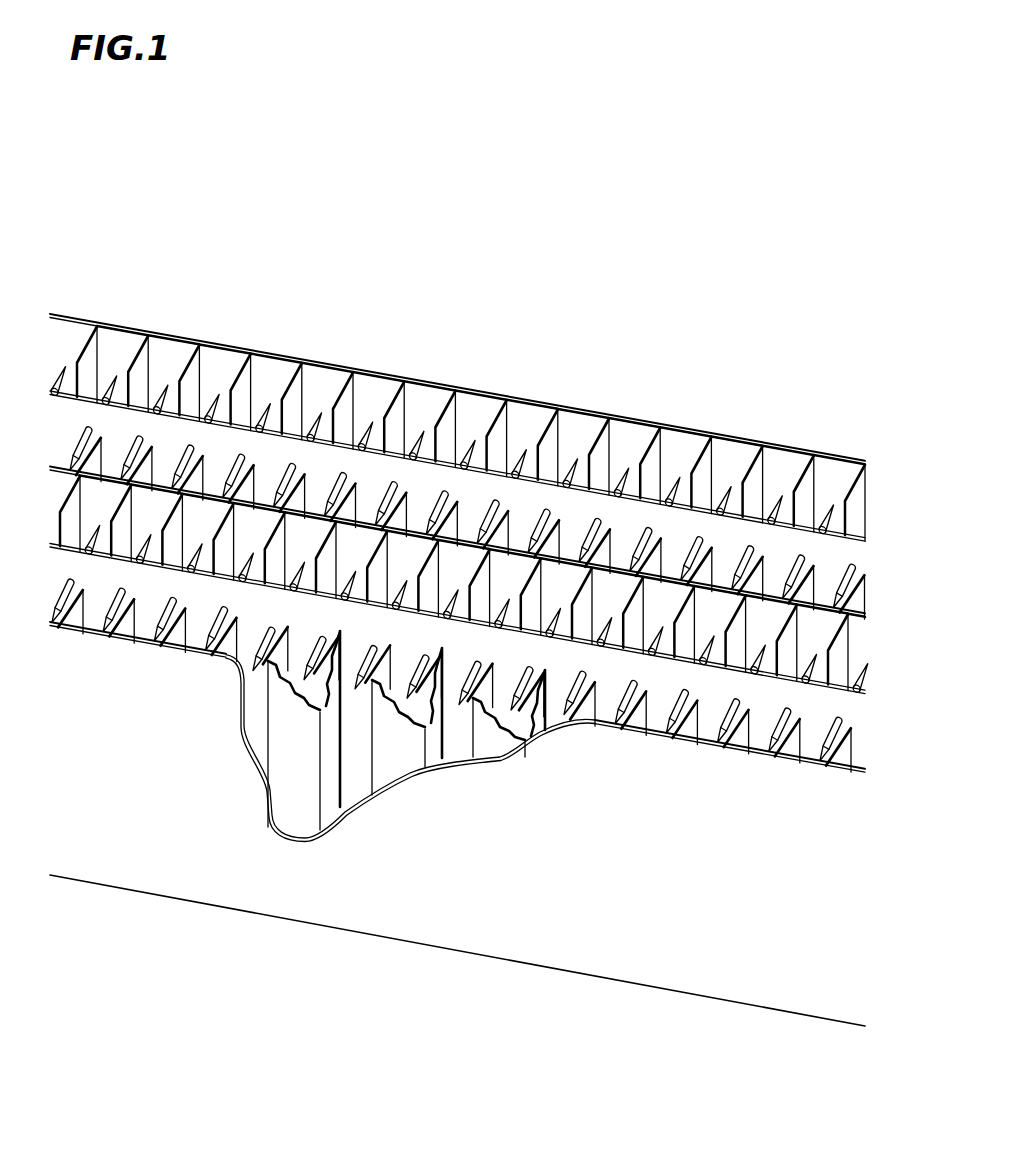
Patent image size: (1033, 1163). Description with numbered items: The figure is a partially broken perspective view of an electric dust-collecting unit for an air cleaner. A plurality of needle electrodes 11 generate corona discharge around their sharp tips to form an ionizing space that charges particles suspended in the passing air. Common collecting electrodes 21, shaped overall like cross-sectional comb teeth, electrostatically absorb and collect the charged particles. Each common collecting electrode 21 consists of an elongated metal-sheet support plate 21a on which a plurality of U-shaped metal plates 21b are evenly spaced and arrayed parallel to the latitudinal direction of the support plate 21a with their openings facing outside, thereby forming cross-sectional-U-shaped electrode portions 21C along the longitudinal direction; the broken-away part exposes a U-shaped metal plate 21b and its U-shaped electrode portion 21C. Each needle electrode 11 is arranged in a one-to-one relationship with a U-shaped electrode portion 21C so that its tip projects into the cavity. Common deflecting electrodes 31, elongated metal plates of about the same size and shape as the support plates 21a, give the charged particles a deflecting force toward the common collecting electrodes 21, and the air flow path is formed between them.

The needle electrode 11 is at (571, 442).
The common collecting electrode 21 is at (422, 364).
The support plate 21a is at (183, 820).
The U-shaped metal plate 21b is at (297, 785).
The U-shaped electrode portion 21C is at (255, 378).
The common deflecting electrode 31 is at (755, 790).